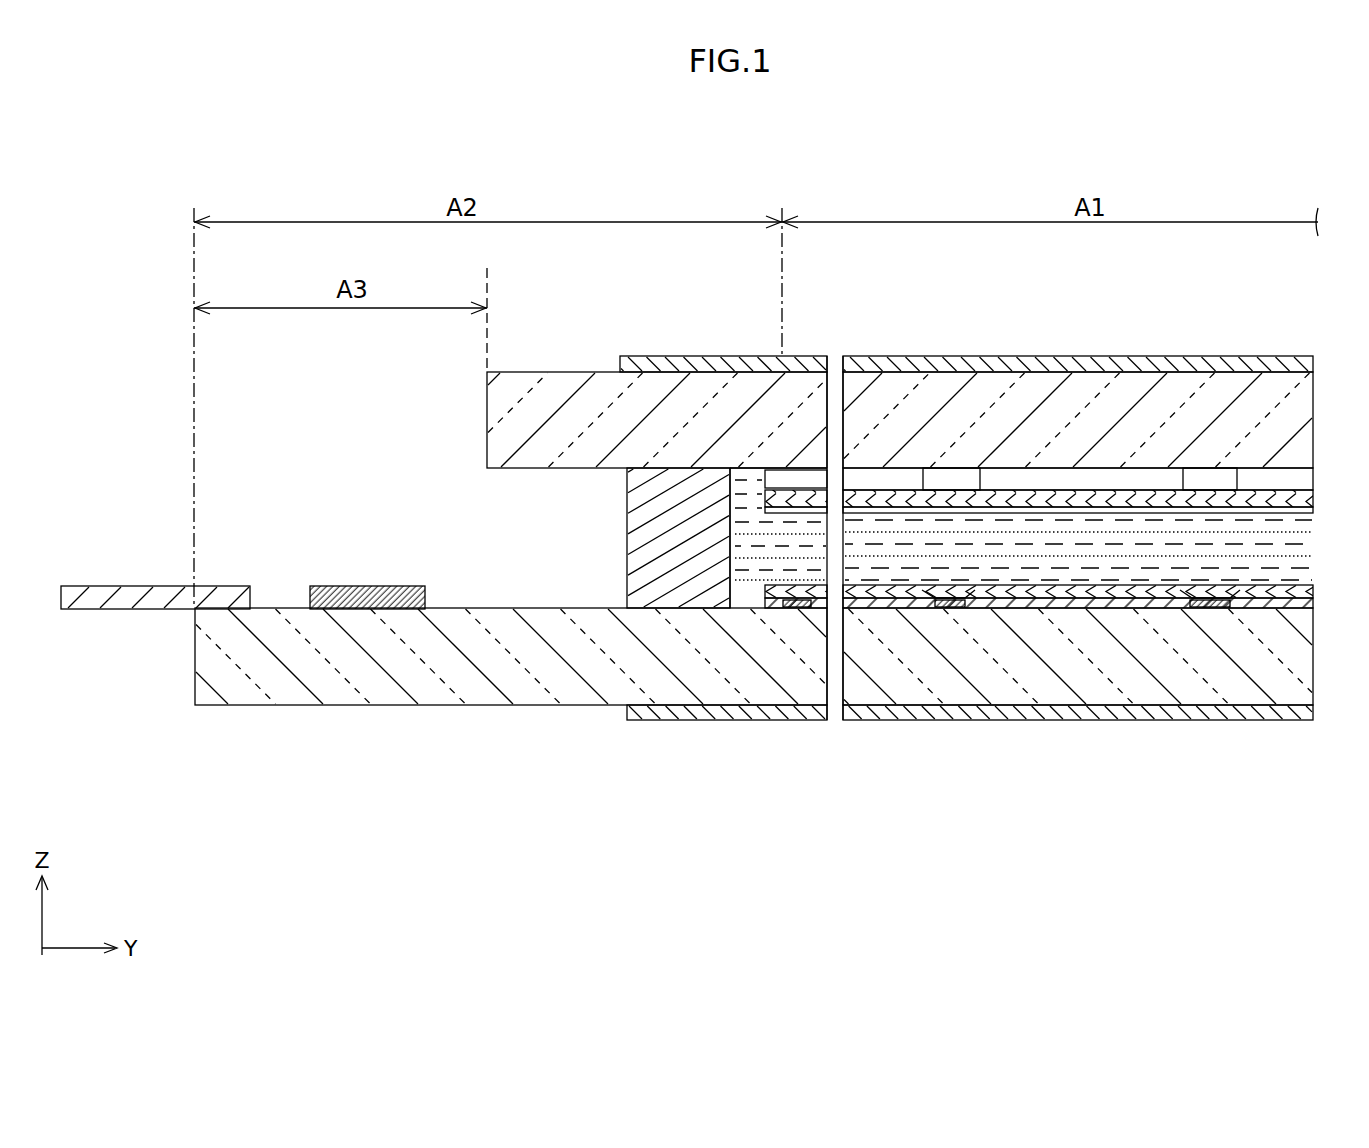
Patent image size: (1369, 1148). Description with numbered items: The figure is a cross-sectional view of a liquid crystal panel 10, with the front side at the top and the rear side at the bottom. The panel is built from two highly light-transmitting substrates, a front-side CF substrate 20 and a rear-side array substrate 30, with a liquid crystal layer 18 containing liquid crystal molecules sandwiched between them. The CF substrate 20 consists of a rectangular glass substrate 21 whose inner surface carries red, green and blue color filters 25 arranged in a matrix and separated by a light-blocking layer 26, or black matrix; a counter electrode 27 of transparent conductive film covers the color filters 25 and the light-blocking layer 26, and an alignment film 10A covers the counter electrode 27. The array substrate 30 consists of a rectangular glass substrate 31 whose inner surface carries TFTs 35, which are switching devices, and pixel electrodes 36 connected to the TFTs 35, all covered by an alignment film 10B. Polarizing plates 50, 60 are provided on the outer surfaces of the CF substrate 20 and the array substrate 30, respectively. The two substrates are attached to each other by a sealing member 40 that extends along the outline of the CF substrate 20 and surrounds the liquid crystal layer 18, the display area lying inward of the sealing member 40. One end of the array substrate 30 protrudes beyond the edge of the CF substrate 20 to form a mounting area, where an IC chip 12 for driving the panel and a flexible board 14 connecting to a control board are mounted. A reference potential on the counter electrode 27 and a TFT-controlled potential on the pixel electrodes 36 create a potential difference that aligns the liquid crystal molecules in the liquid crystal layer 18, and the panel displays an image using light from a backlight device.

The liquid crystal panel 10 is at (296, 735).
The alignment film 10A is at (1113, 506).
The alignment film 10B is at (1102, 598).
The IC chip 12 is at (360, 598).
The flexible board 14 is at (130, 598).
The liquid crystal layer 18 is at (1296, 562).
The CF substrate 20 is at (1296, 413).
The glass substrate 21 is at (574, 416).
The color filters 25 is at (903, 478).
The light-blocking layer 26 is at (775, 478).
The counter electrode 27 is at (1048, 497).
The array substrate 30 is at (1296, 658).
The glass substrate 31 is at (523, 680).
The TFTs 35 is at (797, 606).
The pixel electrodes 36 is at (879, 602).
The sealing member 40 is at (660, 540).
The polarizing plate 50 is at (1262, 366).
The polarizing plate 60 is at (1270, 712).